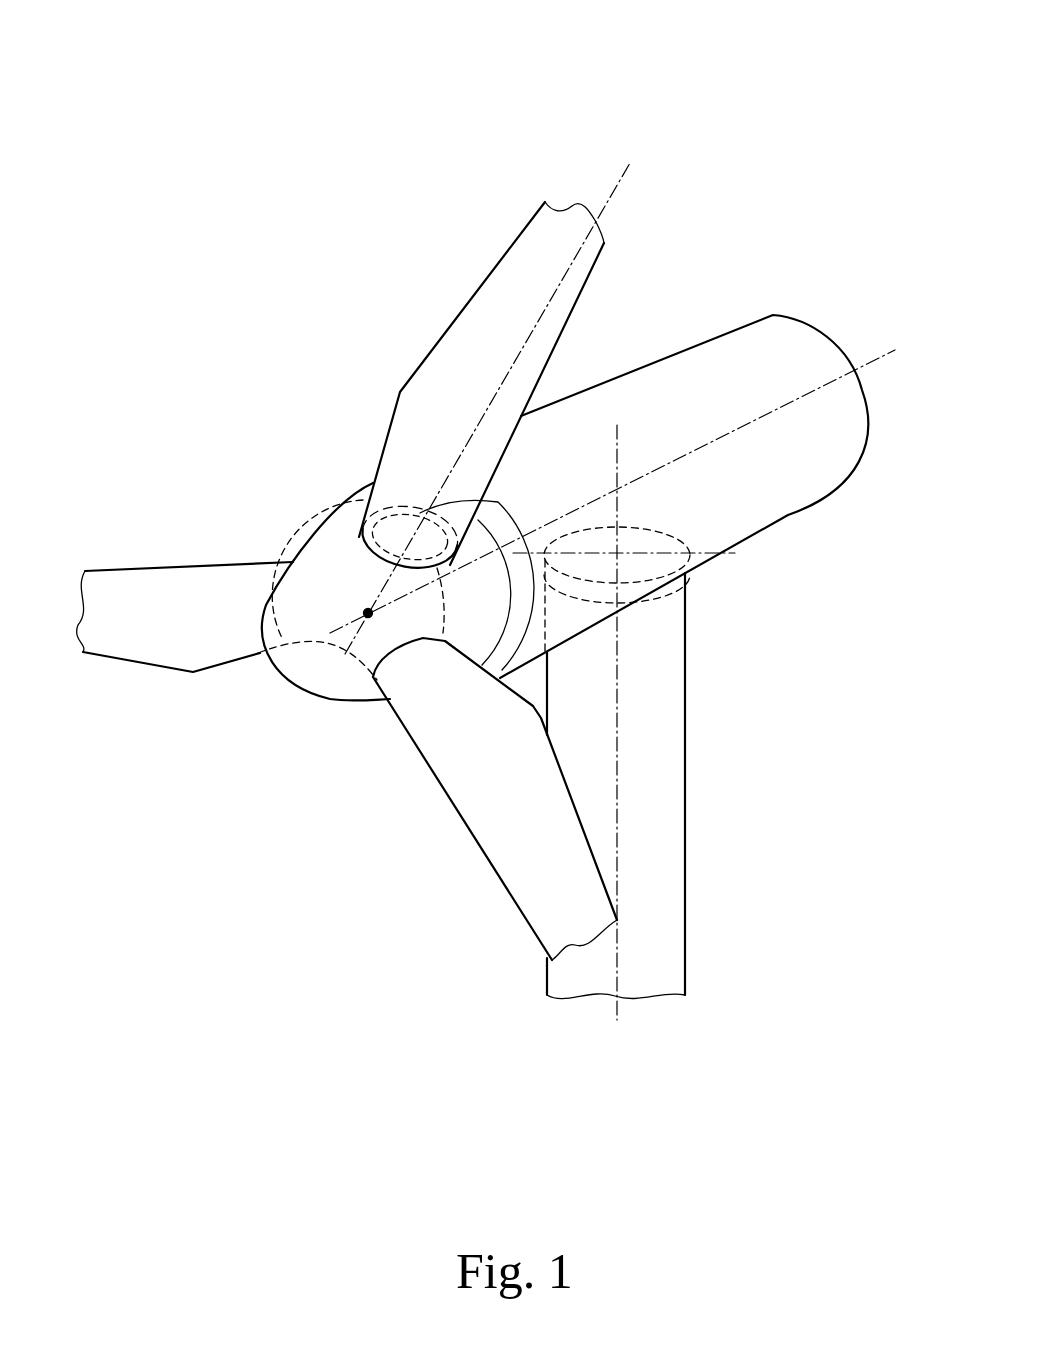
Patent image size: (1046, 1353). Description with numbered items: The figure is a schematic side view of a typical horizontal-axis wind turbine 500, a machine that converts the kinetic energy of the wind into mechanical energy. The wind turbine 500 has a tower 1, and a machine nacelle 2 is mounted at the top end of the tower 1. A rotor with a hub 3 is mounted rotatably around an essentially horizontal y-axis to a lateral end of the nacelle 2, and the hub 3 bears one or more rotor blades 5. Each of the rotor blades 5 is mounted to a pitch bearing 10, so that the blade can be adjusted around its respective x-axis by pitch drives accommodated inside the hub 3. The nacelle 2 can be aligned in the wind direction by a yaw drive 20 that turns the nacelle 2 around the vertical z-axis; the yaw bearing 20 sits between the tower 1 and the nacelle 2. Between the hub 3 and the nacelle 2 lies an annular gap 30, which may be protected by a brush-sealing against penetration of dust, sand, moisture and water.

The wind turbine 500 is at (550, 21).
The tower 1 is at (655, 658).
The machine nacelle 2 is at (752, 347).
The hub 3 is at (322, 663).
The rotor blades 5 is at (507, 303).
The pitch bearing 10 is at (365, 527).
The yaw drive 20 is at (677, 565).
The annular gap 30 is at (517, 513).